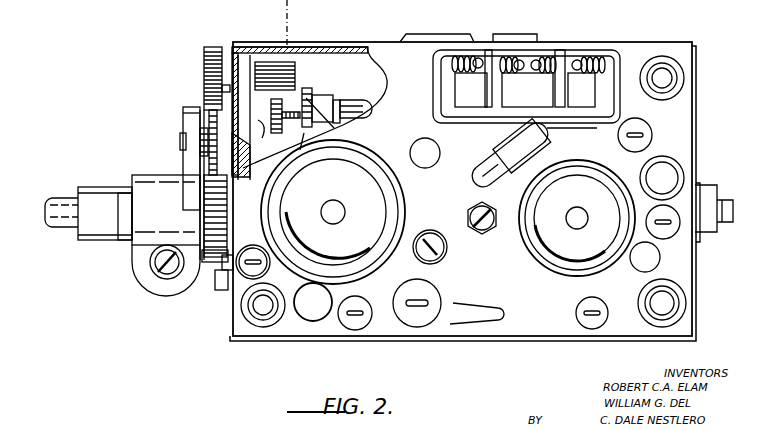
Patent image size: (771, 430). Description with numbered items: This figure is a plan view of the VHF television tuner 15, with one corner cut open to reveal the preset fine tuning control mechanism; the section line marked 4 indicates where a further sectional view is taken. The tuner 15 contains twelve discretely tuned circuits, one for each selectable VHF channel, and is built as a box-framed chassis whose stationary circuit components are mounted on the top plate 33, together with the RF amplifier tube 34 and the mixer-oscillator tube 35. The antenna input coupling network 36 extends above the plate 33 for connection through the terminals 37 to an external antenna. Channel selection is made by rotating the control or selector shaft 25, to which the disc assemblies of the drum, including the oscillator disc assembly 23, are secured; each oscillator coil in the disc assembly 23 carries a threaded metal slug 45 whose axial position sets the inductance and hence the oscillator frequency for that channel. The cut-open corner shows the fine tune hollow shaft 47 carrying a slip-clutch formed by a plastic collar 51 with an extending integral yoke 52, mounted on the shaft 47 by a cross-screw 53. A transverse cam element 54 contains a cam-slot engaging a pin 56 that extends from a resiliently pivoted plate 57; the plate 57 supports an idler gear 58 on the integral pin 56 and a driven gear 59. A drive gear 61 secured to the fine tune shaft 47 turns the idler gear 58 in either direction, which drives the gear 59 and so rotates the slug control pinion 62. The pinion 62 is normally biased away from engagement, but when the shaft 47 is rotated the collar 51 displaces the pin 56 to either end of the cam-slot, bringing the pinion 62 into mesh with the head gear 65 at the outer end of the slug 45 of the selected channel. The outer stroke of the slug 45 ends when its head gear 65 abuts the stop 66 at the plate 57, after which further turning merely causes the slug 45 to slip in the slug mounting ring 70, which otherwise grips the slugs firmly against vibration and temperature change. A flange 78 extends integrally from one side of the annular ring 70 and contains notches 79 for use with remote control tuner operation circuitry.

The section line 4- 4 is at (285, 24).
The tuner 15 is at (222, 331).
The oscillator disc assembly 23 is at (352, 100).
The control or selector shaft 25 is at (60, 232).
The top plate 33 is at (383, 80).
The RF amplifier tube 34 is at (570, 245).
The mixer-oscillator tube 35 is at (372, 200).
The antenna input coupling network 36 is at (624, 63).
The terminals 37 is at (487, 57).
The threaded metal member or slug 45 is at (288, 114).
The fine tune hollow shaft 47 is at (100, 240).
The collar 51 is at (150, 188).
The yoke 52 is at (172, 290).
The cross-screw 53 is at (155, 266).
The transverse cam element 54 is at (185, 119).
The pin 56 is at (180, 142).
The resiliently pivoted plate 57 is at (252, 170).
The idler gear 58 is at (186, 114).
The driven gear 59 is at (212, 46).
The drive gear 61 is at (214, 256).
The slug control pinion 62 is at (296, 63).
The head gear 65 is at (268, 114).
The stop 66 is at (263, 135).
The slug mounting ring 70 is at (318, 90).
The flange 78 is at (306, 125).
The notches 79 is at (317, 115).